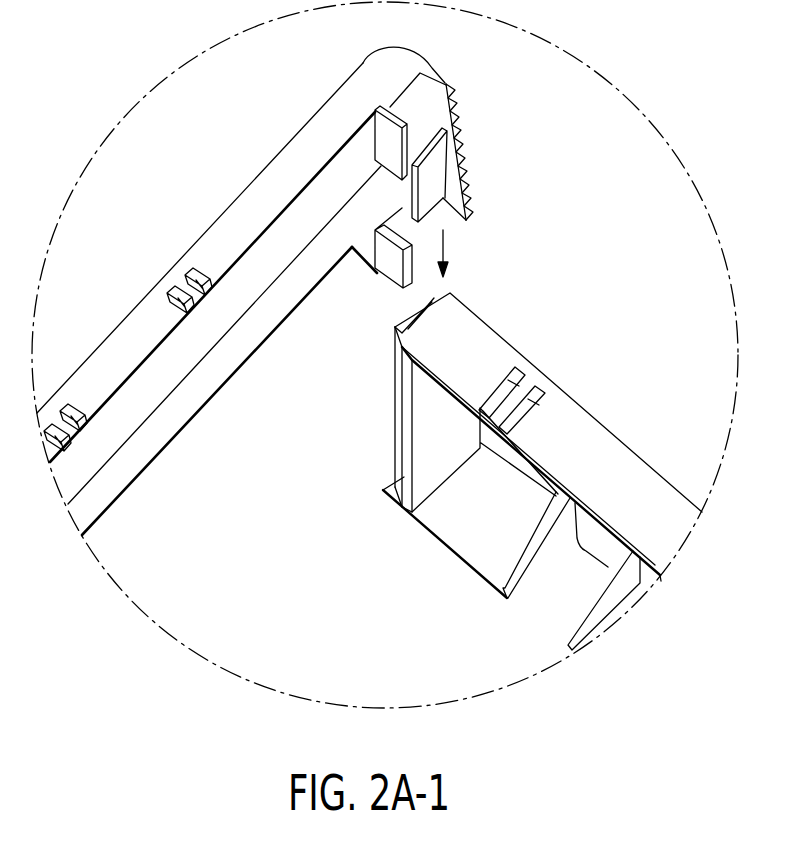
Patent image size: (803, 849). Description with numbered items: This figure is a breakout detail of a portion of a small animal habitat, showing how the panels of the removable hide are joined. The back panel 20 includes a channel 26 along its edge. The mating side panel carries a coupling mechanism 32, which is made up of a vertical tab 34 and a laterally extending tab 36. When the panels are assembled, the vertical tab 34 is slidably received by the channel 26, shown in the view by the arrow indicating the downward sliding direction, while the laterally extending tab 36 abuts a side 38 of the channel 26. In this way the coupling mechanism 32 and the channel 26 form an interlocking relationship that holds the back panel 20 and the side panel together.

The back panel 20 is at (475, 323).
The channel 26 is at (427, 300).
The coupling mechanism 32 is at (432, 148).
The vertical tab 34 is at (437, 163).
The laterally extending tab 36 is at (388, 275).
The side of channel 38 is at (395, 437).